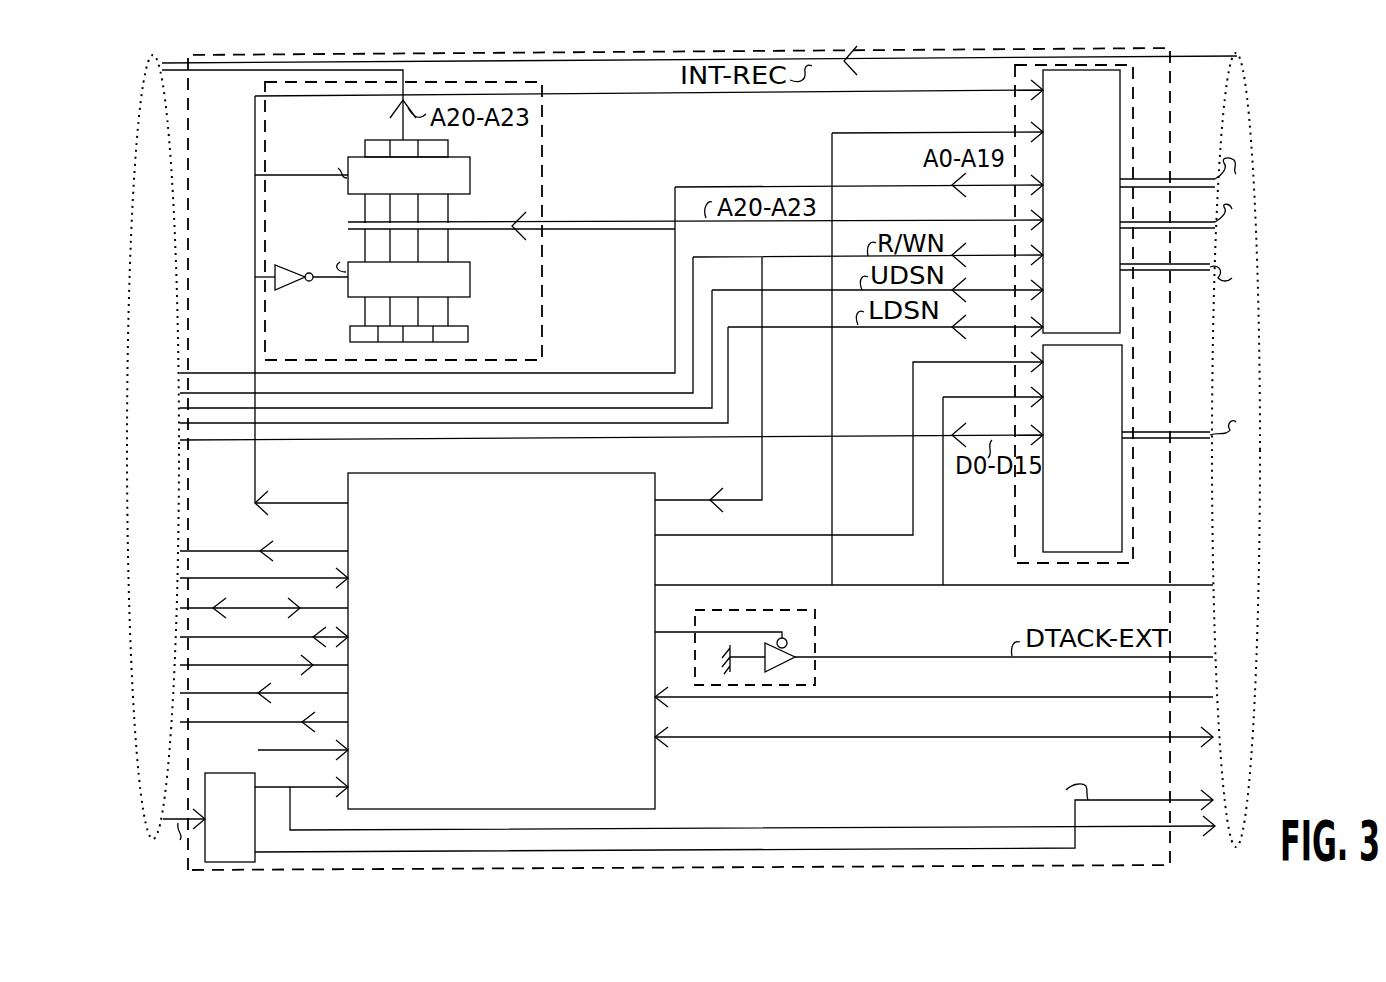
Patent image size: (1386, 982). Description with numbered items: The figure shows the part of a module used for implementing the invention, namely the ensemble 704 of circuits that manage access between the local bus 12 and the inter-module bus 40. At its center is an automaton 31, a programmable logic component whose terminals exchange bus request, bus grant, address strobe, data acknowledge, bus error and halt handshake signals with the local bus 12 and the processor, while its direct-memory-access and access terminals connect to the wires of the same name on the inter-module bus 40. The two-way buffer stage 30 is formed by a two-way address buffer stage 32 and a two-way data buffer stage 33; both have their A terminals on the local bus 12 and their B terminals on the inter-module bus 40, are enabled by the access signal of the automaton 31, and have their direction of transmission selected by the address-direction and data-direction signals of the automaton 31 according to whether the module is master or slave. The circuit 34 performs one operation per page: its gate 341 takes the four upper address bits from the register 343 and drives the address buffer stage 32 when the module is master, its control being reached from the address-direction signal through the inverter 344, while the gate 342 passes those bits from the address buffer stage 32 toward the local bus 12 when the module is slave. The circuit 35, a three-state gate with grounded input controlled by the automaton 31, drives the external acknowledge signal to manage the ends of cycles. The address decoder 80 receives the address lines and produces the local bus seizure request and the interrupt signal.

The local bus 12 is at (131, 292).
The two-way buffer stage 30 is at (1133, 360).
The automaton 31 is at (512, 473).
The two-way address buffer stage 32 is at (1120, 132).
The two-way data buffer stage 33 is at (1122, 512).
The circuit 34 is at (416, 221).
The circuit 35 is at (815, 683).
The inter-module bus 40 is at (1230, 94).
The address decoder 80 is at (245, 862).
The gate 341 is at (486, 252).
The gate 342 is at (470, 190).
The register 343 is at (462, 345).
The inverter 344 is at (296, 284).
The ensemble of circuits 704 is at (1196, 836).